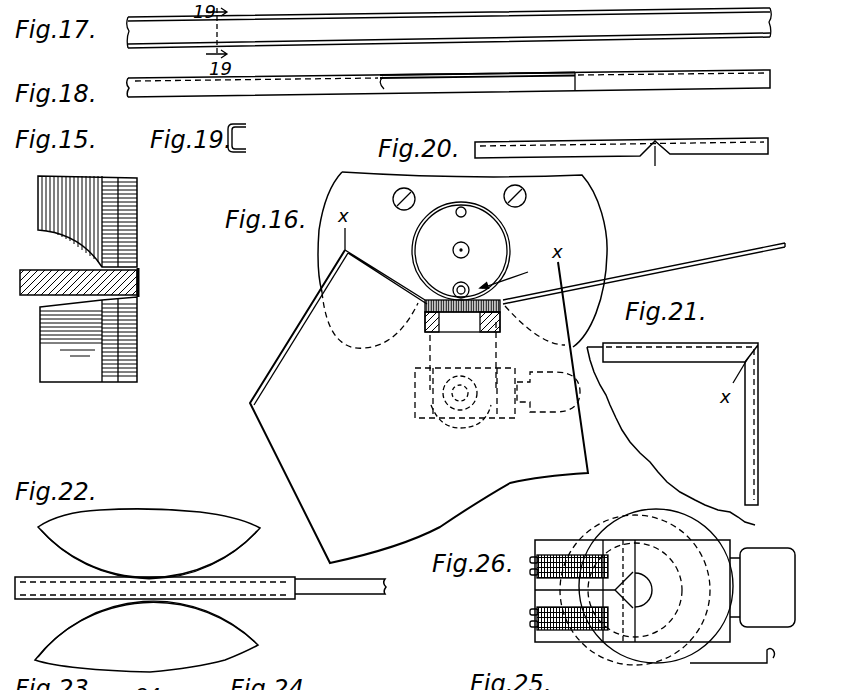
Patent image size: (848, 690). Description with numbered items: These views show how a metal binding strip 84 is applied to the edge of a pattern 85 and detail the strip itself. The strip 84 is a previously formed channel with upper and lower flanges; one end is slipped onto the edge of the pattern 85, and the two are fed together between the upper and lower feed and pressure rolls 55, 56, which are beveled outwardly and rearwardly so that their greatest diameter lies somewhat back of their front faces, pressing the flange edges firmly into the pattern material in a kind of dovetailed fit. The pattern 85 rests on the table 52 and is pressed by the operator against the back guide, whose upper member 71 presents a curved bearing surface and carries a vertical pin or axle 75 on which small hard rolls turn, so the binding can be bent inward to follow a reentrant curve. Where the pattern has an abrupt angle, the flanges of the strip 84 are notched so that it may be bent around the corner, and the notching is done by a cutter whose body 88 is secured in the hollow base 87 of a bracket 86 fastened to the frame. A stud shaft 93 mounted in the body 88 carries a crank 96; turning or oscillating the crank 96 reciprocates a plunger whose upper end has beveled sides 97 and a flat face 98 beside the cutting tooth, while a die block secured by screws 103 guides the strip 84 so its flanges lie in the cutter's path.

In FIG. 16, the table 52 is at (587, 241).
In FIG. 15, the feed and pressure roll 55 is at (130, 240).
In FIG. 16, the feed and pressure roll 55 is at (437, 320).
In FIG. 22, the feed and pressure roll 55 is at (149, 544).
In FIG. 15, the feed and pressure roll 56 is at (137, 325).
In FIG. 16, the feed and pressure roll 56 is at (430, 333).
In FIG. 22, the feed and pressure roll 56 is at (146, 636).
In FIG. 16, the upper member of back guide 71 is at (413, 262).
In FIG. 16, the vertical pin or axle 75 is at (466, 284).
In FIG. 17, the binding strip 84 is at (332, 39).
In FIG. 18, the binding strip 84 is at (362, 84).
In FIG. 19, the binding strip 84 is at (244, 126).
In FIG. 20, the binding strip 84 is at (566, 140).
In FIG. 15, the binding strip 84 is at (140, 315).
In FIG. 16, the binding strip 84 is at (670, 266).
In FIG. 22, the binding strip 84 is at (272, 593).
In FIG. 15, the pattern 85 is at (50, 280).
In FIG. 16, the pattern 85 is at (419, 406).
In FIG. 21, the pattern 85 is at (671, 436).
In FIG. 22, the pattern 85 is at (348, 595).
In FIG. 21, the bracket 86 is at (755, 343).
In FIG. 26, the hollow base 87 is at (740, 670).
In FIG. 16, the body of the cutter 88 is at (497, 420).
In FIG. 26, the body of the cutter 88 is at (715, 633).
In FIG. 26, the stud shaft 93 is at (742, 553).
In FIG. 16, the crank 96 is at (527, 402).
In FIG. 26, the crank 96 is at (762, 587).
In FIG. 16, the beveled sides 97 is at (507, 378).
In FIG. 26, the beveled sides 97 is at (625, 578).
In FIG. 26, the flat face 98 is at (563, 590).
In FIG. 26, the screw 103 is at (530, 620).